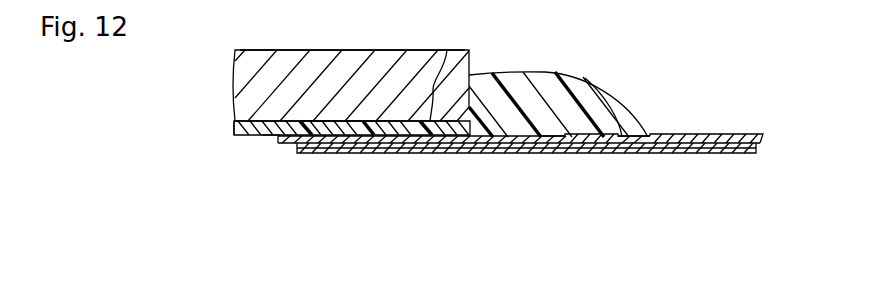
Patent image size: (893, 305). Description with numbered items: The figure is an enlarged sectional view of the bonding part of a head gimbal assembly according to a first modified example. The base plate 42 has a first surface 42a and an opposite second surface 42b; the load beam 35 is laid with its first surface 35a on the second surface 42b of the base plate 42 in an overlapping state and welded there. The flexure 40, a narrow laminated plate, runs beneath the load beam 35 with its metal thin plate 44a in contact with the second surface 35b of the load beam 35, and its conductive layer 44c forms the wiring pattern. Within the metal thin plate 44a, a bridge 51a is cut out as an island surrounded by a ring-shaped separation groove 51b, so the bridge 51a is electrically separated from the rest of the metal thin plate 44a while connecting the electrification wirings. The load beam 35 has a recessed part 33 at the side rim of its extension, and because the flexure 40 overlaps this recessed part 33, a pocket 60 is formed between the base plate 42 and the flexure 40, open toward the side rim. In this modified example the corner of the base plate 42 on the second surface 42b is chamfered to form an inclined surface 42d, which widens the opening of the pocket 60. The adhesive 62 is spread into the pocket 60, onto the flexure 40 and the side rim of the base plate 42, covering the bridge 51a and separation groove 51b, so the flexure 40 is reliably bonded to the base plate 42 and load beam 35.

The base plate 42 is at (282, 63).
The first surface 42a is at (353, 50).
The second surface 42b is at (352, 128).
The inclined surface 42d is at (440, 63).
The adhesive 62 is at (543, 90).
The load beam 35 is at (246, 137).
The first surface 35a is at (236, 115).
The second surface 35b is at (271, 140).
The recessed part 33 is at (312, 143).
The pocket 60 is at (387, 133).
The conductive layer 44c is at (496, 152).
The metal thin plate 44a is at (703, 137).
The bridge 51a is at (594, 153).
The separation groove 51b is at (547, 152).
The flexure 40 is at (722, 163).